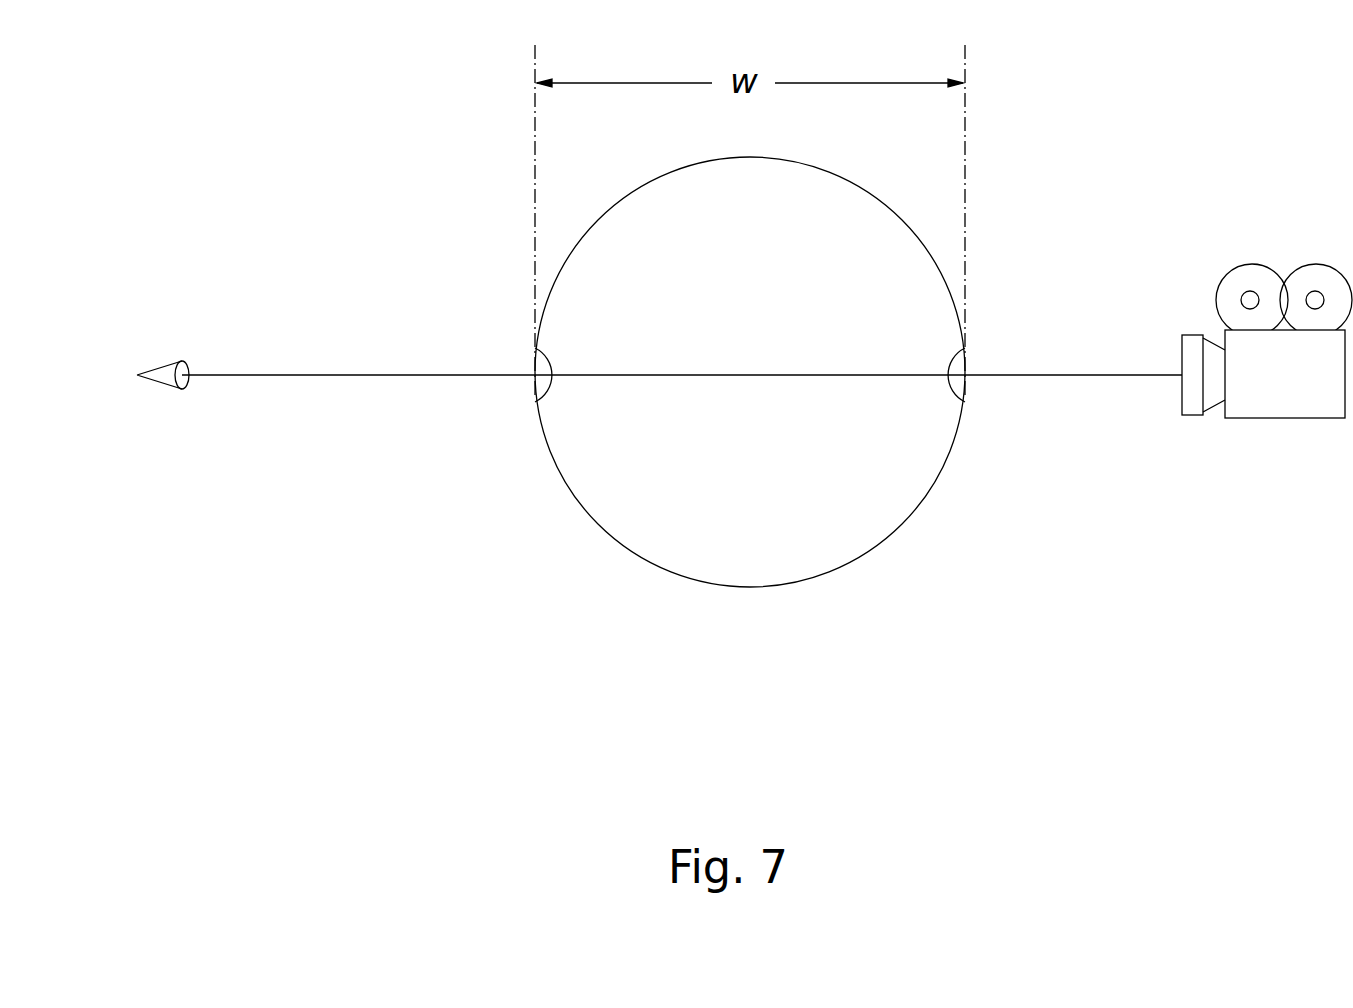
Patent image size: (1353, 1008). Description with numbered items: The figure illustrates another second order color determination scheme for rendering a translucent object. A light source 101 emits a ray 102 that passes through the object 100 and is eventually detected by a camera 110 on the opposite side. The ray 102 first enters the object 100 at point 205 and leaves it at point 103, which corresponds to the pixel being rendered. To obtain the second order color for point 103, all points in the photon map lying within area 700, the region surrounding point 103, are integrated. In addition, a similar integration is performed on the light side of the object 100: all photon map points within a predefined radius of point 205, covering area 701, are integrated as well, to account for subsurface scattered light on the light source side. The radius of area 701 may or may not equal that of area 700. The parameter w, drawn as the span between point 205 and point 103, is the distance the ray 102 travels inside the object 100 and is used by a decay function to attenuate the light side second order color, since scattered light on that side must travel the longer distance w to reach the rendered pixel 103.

The object 100 is at (765, 588).
The light source 101 is at (173, 390).
The ray 102 is at (332, 375).
The point 103 is at (965, 377).
The camera 110 is at (1267, 418).
The point 205 is at (533, 377).
The area 700 is at (957, 400).
The area 701 is at (540, 402).